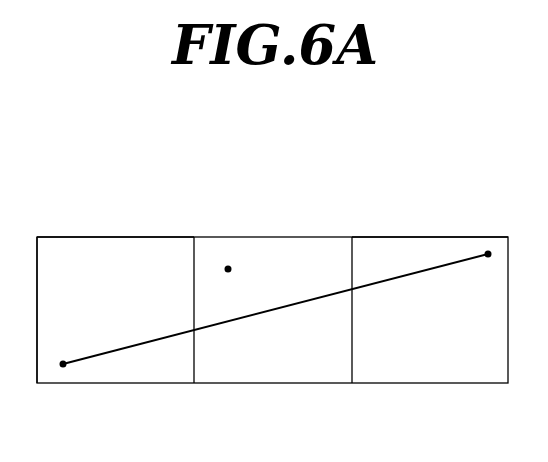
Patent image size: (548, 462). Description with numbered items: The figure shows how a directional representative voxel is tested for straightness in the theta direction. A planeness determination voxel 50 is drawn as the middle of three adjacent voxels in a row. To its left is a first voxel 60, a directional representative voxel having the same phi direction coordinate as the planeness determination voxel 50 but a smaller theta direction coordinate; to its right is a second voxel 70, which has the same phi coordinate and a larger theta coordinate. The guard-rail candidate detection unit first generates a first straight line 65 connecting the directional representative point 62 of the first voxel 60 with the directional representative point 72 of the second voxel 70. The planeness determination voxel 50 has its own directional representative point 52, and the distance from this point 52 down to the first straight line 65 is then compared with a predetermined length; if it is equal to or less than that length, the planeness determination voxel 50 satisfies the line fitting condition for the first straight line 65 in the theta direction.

The planeness determination voxel 50 is at (281, 252).
The directional representative point 52 is at (228, 265).
The first voxel 60 is at (106, 255).
The directional representative point 62 is at (62, 369).
The first straight line 65 is at (328, 295).
The second voxel 70 is at (411, 253).
The directional representative point 72 is at (488, 250).